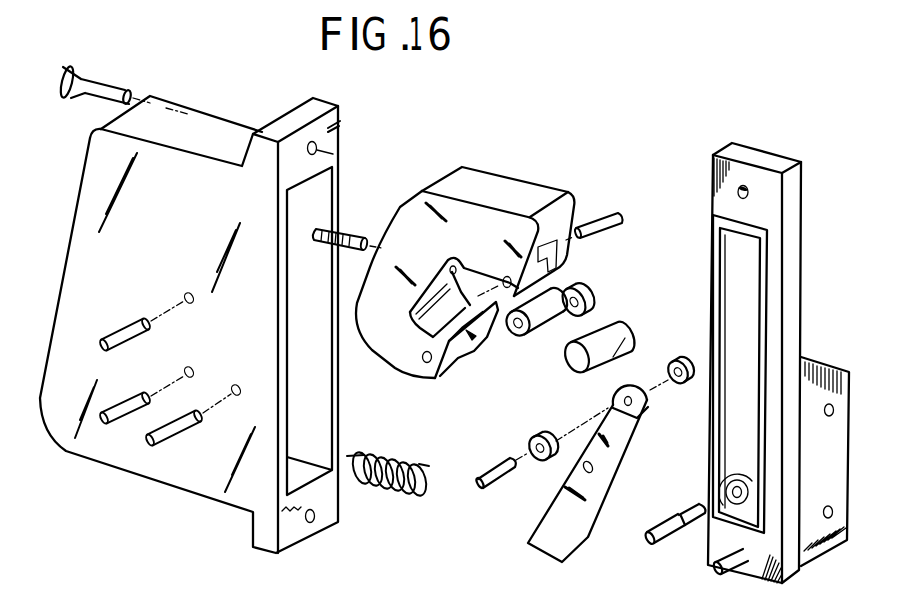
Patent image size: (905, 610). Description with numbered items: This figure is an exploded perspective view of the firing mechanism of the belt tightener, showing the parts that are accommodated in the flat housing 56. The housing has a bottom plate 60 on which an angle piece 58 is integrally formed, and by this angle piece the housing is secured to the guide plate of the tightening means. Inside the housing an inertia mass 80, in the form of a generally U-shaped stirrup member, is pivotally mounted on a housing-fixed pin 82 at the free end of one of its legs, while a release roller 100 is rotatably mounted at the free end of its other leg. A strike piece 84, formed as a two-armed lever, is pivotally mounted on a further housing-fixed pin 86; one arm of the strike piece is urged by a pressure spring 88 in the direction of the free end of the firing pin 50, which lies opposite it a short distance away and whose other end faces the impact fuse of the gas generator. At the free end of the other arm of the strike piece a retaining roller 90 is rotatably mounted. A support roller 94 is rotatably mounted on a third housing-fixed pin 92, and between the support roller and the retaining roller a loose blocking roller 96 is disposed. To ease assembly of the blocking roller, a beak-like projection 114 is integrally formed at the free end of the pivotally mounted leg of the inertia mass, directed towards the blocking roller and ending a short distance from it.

The flat housing 56 is at (92, 168).
The housing-fixed pin 92 is at (127, 328).
The housing-fixed pin 82 is at (115, 432).
The housing-fixed pin 86 is at (147, 447).
The inertia mass 80 is at (465, 272).
The beak-like projection 114 is at (474, 352).
The support roller 94 is at (522, 336).
The release roller 100 is at (590, 284).
The blocking roller 96 is at (622, 333).
The retaining roller 90 is at (679, 383).
The strike piece 84 is at (543, 528).
The firing pin 50 is at (653, 545).
The pressure spring 88 is at (378, 488).
The bottom plate 60 is at (800, 192).
The angle piece 58 is at (817, 377).